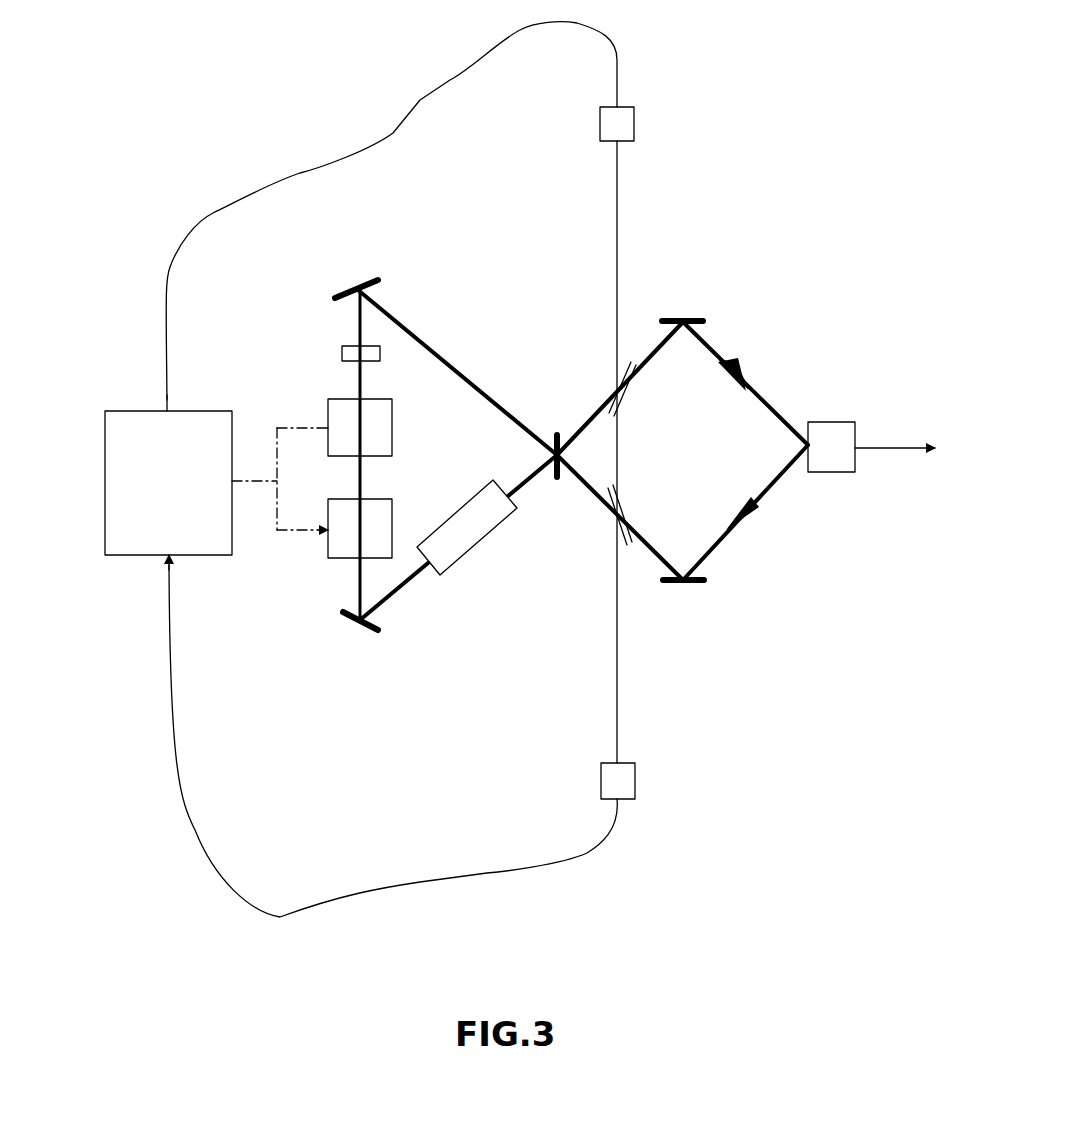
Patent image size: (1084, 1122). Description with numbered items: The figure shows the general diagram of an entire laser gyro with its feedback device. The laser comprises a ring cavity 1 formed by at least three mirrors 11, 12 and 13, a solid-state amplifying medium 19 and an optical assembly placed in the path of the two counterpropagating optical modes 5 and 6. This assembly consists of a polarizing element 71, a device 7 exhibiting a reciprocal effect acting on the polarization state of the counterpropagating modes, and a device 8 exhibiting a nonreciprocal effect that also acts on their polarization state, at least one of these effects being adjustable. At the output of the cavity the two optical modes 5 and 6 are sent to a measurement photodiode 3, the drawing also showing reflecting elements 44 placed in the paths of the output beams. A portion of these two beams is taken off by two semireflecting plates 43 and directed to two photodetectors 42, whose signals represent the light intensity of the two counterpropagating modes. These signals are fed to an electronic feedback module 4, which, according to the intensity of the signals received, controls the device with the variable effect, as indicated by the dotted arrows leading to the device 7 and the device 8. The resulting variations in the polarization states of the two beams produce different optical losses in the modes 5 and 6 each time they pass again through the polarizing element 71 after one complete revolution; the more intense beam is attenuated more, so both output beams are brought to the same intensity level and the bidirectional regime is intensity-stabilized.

The ring cavity 1 is at (434, 275).
The measurement photodiode 3 is at (838, 440).
The electronic feedback module 4 is at (133, 425).
The counterpropagating optical mode 5 is at (747, 370).
The counterpropagating optical mode 6 is at (750, 517).
The device exhibiting a reciprocal effect 7 is at (343, 418).
The device exhibiting a nonreciprocal effect 8 is at (347, 542).
The mirror 11 is at (347, 617).
The mirror 12 is at (350, 287).
The mirror 13 is at (553, 447).
The solid-state amplifying medium 19 is at (475, 537).
The photodetector 42 is at (622, 128).
The semireflecting plate 43 is at (627, 393).
The mirror 44 is at (684, 316).
The polarizing element 71 is at (343, 355).